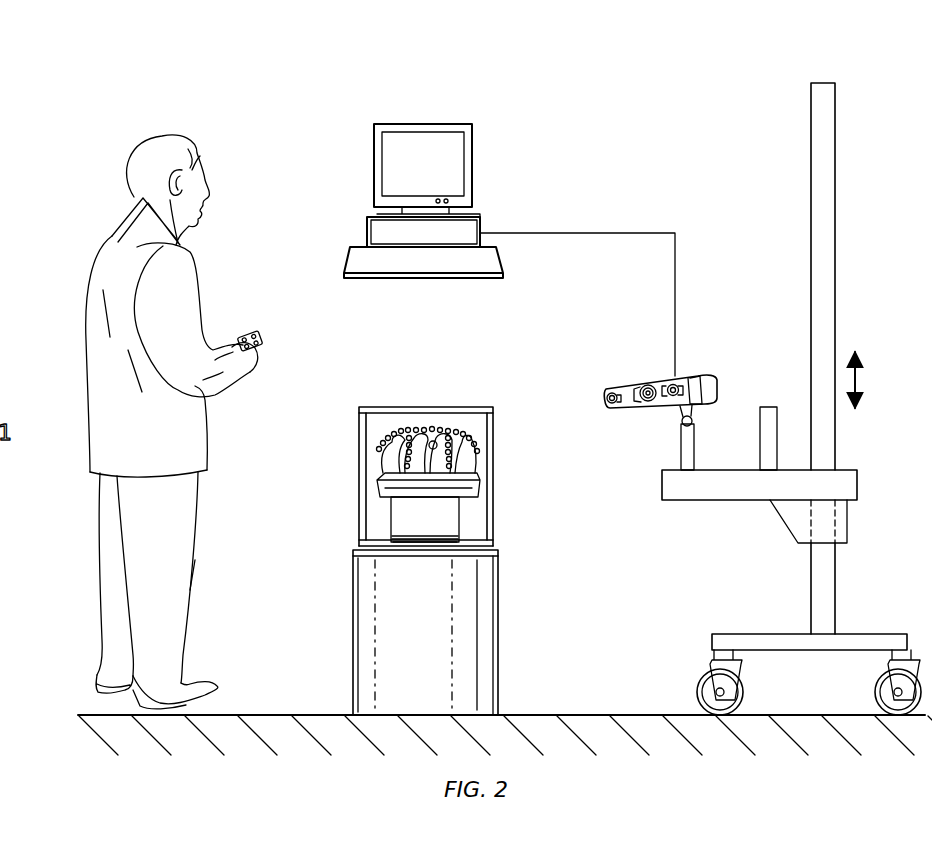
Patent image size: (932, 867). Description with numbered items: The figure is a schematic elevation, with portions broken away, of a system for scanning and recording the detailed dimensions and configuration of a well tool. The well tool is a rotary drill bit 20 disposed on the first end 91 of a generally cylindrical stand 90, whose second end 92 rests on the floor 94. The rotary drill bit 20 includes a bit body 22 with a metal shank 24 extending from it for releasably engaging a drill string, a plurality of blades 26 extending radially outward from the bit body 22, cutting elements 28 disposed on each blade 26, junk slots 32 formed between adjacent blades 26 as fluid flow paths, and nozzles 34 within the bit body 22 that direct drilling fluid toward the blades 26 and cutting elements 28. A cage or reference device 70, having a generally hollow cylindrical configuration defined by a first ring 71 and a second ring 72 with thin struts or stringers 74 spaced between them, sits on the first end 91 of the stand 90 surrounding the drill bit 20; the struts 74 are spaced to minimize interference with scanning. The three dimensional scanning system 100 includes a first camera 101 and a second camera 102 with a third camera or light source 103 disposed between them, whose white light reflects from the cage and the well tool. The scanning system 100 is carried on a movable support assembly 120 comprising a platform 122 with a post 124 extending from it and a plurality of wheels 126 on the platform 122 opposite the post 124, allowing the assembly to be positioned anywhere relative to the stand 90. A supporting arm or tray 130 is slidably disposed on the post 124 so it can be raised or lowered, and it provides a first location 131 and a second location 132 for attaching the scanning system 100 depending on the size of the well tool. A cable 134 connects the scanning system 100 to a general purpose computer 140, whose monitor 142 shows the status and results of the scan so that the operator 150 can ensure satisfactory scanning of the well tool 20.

The operator 150 is at (148, 111).
The general purpose computer 140 is at (491, 134).
The computer monitor 142 is at (390, 153).
The cable 134 is at (587, 233).
The 3D scanning system 100 is at (712, 362).
The second camera 102 is at (612, 386).
The third camera or light source 103 is at (633, 404).
The first camera 101 is at (662, 405).
The movable support assembly 120 is at (683, 585).
The post 124 is at (836, 158).
The first location 131 is at (695, 445).
The second location 132 is at (768, 407).
The supporting arm or tray 130 is at (709, 506).
The platform 122 is at (873, 634).
The wheels 126 is at (697, 692).
The cage or reference device 70 is at (497, 418).
The first ring 71 is at (482, 407).
The struts or stringers 74 is at (359, 430).
The second ring 72 is at (482, 534).
The rotary drill bit 20 is at (463, 516).
The metal shank 24 is at (389, 518).
The bit body 22 is at (376, 465).
The junk slots 32 is at (378, 480).
The blades 26 is at (473, 478).
The cutting elements 28 is at (380, 437).
The nozzles 34 is at (433, 440).
The stand 90 is at (498, 618).
The first end 91 is at (359, 545).
The second end 92 is at (345, 718).
The floor 94 is at (530, 715).